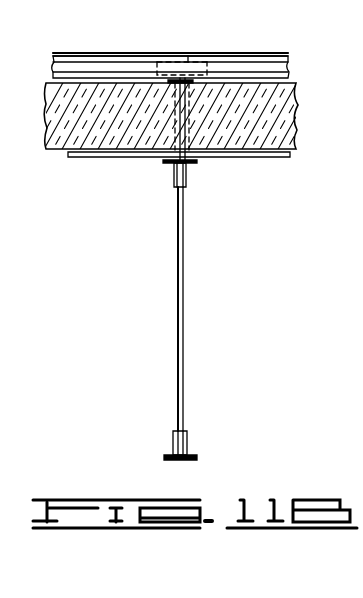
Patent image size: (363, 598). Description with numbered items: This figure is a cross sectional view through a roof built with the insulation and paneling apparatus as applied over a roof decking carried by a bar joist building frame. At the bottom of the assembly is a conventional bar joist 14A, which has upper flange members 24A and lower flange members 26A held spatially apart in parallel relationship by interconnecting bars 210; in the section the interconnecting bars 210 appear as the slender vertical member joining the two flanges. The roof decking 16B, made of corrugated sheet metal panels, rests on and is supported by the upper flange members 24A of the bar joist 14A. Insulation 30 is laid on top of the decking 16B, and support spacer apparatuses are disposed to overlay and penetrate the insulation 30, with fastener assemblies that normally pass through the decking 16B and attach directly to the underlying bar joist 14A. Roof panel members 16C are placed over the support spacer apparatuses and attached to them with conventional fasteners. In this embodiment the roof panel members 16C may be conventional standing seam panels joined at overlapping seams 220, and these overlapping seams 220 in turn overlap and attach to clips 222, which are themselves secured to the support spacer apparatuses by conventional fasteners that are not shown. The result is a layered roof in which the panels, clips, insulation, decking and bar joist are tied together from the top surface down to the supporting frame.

The insulation 30 is at (302, 98).
The roof panel members 16C is at (250, 63).
The overlapping seams 220 is at (125, 53).
The clips 222 is at (193, 46).
The roof decking 16B is at (85, 158).
The upper flange members 24A is at (171, 164).
The interconnecting bars 210 is at (184, 300).
The bar joist 14A is at (178, 318).
The lower flange members 26A is at (172, 453).